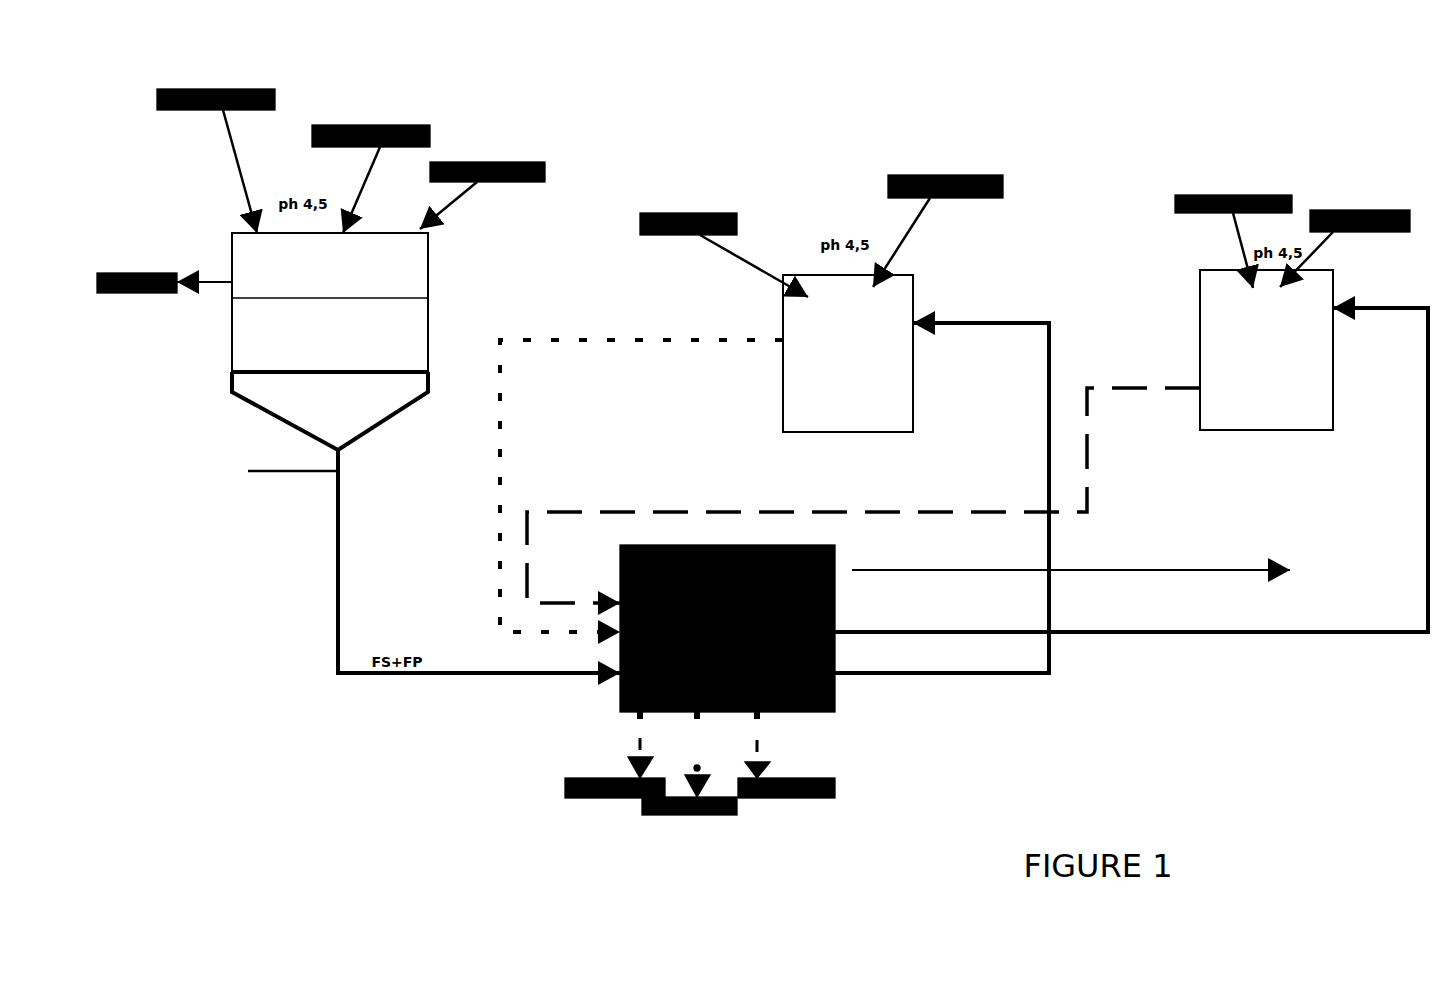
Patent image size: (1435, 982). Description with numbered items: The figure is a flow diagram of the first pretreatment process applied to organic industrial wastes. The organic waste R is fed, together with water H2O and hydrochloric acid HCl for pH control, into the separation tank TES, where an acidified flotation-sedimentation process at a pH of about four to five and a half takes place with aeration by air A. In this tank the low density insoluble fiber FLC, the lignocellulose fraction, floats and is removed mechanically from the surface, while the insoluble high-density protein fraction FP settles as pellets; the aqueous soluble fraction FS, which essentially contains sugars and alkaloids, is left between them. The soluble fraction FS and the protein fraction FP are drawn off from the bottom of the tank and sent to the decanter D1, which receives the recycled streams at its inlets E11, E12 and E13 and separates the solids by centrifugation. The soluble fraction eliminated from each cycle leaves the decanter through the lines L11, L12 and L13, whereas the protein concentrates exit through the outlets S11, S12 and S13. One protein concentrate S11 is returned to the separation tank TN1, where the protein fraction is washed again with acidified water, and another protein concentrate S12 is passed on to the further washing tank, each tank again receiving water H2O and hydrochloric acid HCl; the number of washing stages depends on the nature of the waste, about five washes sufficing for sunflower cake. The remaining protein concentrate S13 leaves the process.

The low density insoluble fiber FLC is at (262, 302).
The soluble fraction FS is at (330, 350).
The protein fraction FP is at (330, 411).
The separation tank TES is at (187, 320).
The air A is at (282, 472).
The water H2O is at (724, 186).
The organic waste R is at (371, 171).
The hydrochloric acid HCl is at (915, 217).
The separation tank TN1 is at (848, 353).
The decanter D1 is at (727, 618).
The recycled FS+FP inlet E11 is at (479, 561).
The recycled FS+FP inlet E12 is at (641, 486).
The recycled FS+FP inlet E13 is at (863, 495).
The protein concentrate S11 is at (942, 498).
The protein concentrate S12 is at (1131, 470).
The protein concentrate S13 is at (1071, 548).
The eliminated FS L11 is at (615, 755).
The eliminated FS L12 is at (689, 763).
The eliminated FS L13 is at (782, 755).